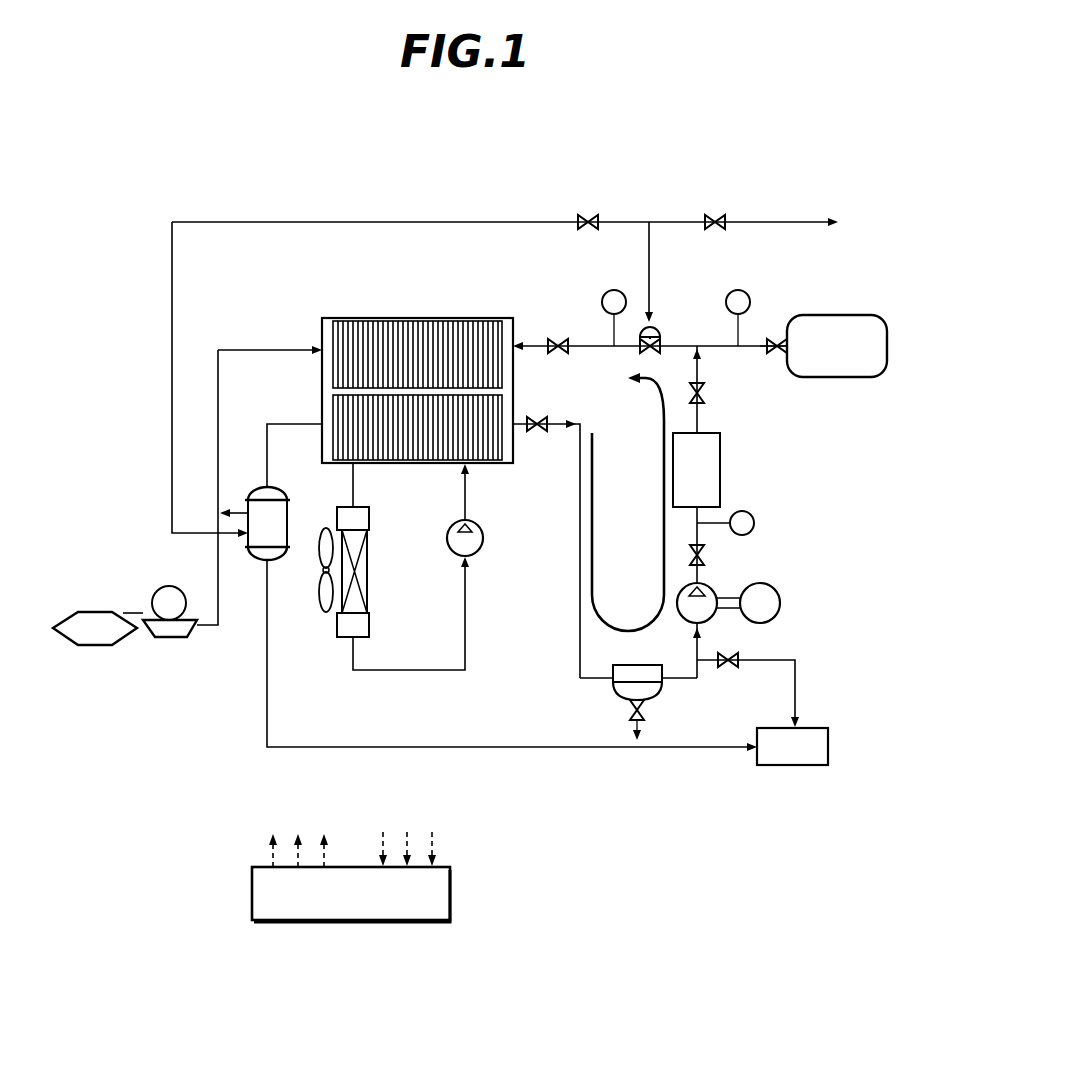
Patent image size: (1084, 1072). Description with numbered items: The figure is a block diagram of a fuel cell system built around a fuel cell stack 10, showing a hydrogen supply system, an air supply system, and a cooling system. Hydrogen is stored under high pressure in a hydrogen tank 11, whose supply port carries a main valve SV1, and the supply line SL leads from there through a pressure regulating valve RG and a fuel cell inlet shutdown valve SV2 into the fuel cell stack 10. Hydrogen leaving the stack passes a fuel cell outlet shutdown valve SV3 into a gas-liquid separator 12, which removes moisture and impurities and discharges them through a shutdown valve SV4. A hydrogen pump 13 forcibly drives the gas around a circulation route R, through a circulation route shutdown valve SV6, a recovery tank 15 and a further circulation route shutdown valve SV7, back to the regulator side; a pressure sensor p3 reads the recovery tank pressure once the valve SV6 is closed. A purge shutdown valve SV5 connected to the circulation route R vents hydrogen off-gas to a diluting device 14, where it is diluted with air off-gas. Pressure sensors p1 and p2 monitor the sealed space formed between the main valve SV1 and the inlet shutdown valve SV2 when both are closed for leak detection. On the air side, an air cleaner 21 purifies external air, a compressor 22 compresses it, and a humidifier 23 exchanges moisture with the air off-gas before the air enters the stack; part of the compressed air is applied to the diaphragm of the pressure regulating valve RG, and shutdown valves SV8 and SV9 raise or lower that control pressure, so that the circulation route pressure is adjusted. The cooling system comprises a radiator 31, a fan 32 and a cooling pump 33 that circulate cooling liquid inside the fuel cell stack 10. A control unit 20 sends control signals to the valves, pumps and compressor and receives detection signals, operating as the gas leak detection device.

The fuel cell stack 10 is at (478, 318).
The hydrogen tank 11 is at (835, 315).
The gas-liquid separator 12 is at (613, 690).
The hydrogen pump 13 is at (714, 594).
The diluting device 14 is at (812, 728).
The recovery tank 15 is at (720, 466).
The control unit 20 is at (452, 897).
The air cleaner 21 is at (98, 612).
The compressor 22 is at (175, 586).
The humidifier 23 is at (280, 490).
The radiator 31 is at (365, 505).
The fan 32 is at (318, 565).
The cooling pump 33 is at (483, 536).
The main valve SV1 is at (779, 338).
The fuel cell inlet shutdown valve SV2 is at (560, 338).
The fuel cell outlet shutdown valve SV3 is at (541, 416).
The shutdown valve for gas-liquid separator SV4 is at (645, 712).
The purge shutdown valve SV5 is at (728, 668).
The circulation route shutdown valve SV6 is at (706, 550).
The circulation route shutdown valve SV7 is at (704, 395).
The shutdown valve SV8 is at (590, 214).
The shutdown valve SV9 is at (718, 214).
The pressure regulating valve RG is at (661, 337).
The pressure sensor p1 is at (741, 290).
The pressure sensor p2 is at (616, 290).
The pressure sensor p3 is at (754, 518).
The supply line SL is at (750, 348).
The circulation route R is at (628, 502).